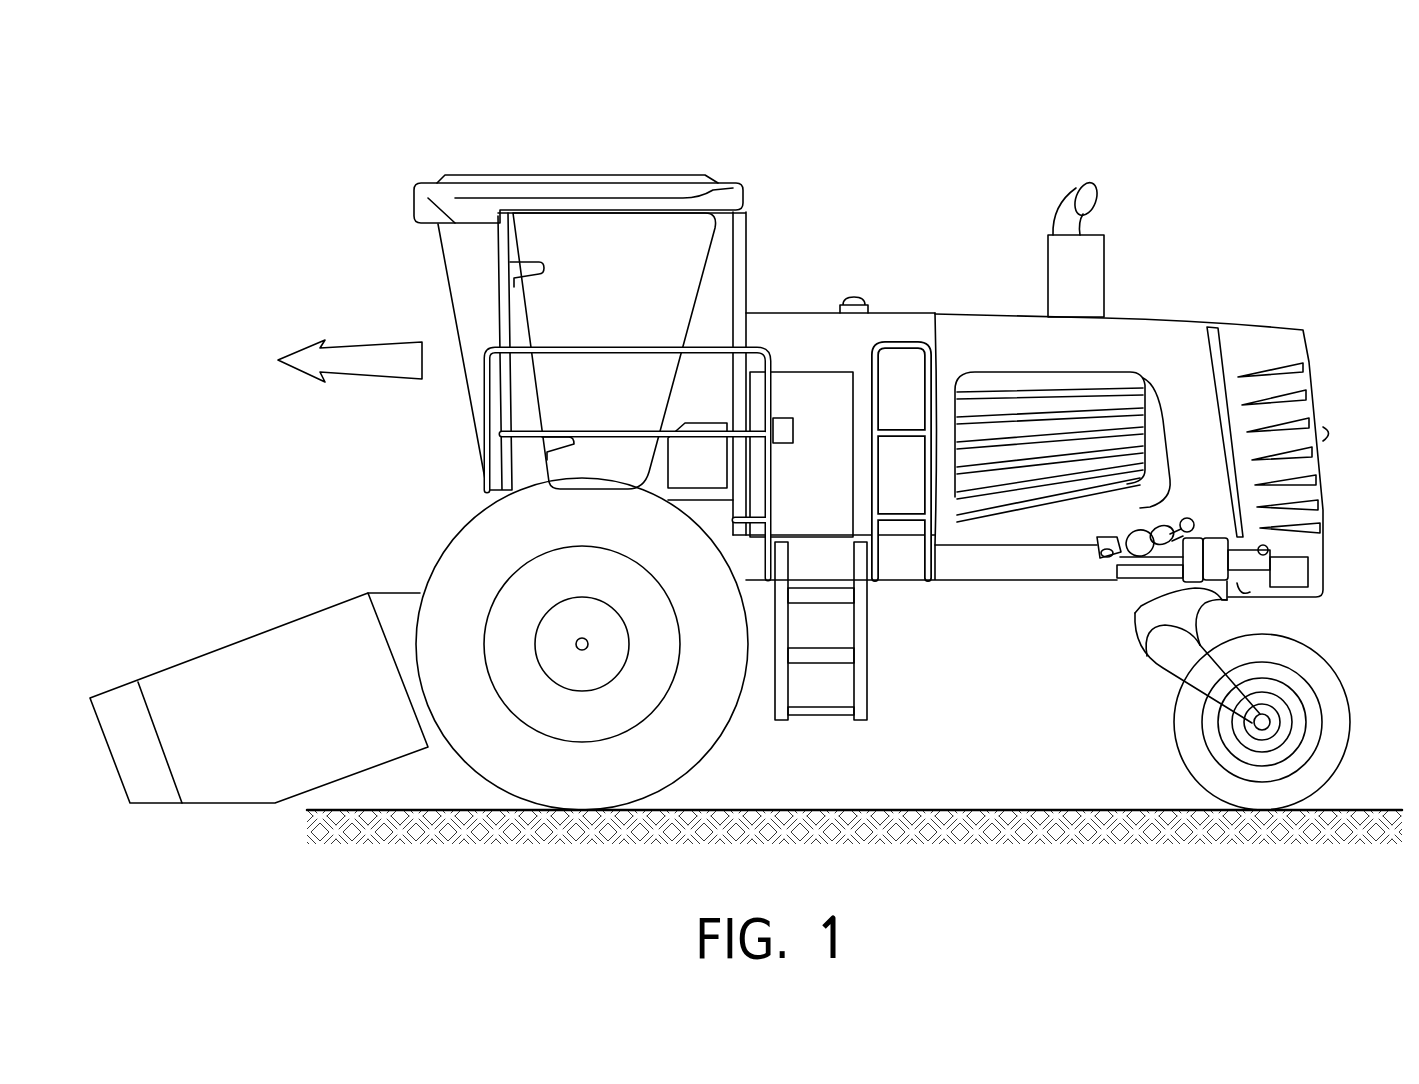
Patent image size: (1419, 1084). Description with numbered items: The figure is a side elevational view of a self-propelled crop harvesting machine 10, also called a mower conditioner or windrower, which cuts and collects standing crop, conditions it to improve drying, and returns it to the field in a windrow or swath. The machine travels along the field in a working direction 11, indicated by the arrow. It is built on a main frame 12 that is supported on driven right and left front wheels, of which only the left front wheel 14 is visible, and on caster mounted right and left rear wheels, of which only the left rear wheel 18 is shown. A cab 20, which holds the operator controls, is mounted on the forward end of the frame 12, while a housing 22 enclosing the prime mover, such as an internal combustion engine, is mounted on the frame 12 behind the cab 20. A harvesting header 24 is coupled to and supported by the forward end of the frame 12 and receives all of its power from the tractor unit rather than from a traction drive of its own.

The crop harvesting machine 10 is at (1030, 137).
The working direction 11 is at (365, 340).
The main frame 12 is at (1017, 572).
The left front wheel 14 is at (717, 740).
The left rear wheel 18 is at (1342, 712).
The cab 20 is at (540, 192).
The housing 22 is at (1157, 327).
The harvesting header 24 is at (237, 615).